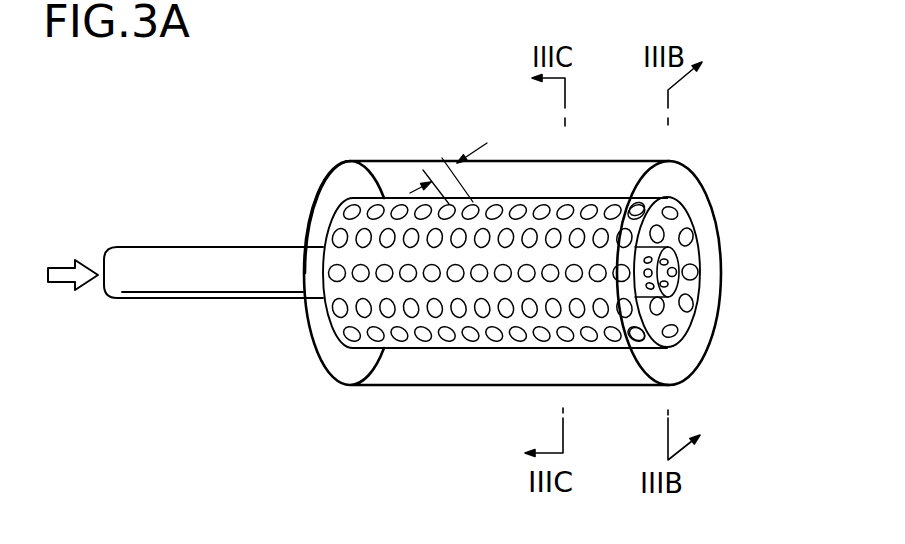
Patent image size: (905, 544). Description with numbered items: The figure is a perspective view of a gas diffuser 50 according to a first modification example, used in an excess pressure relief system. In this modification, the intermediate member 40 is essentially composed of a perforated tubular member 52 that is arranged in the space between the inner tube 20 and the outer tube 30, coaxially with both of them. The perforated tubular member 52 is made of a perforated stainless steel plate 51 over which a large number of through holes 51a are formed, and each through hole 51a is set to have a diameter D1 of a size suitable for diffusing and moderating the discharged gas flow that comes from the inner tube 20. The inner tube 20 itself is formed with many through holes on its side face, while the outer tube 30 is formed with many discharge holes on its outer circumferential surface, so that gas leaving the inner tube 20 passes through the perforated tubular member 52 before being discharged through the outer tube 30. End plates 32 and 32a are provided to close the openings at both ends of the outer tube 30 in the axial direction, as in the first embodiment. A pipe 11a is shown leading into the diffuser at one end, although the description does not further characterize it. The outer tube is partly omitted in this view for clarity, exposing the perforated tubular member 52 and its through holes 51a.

The inlet pipe 11a is at (163, 258).
The inner tube 20 is at (675, 235).
The outer tube 30 is at (394, 168).
The end plate 32 is at (670, 363).
The end plate 32a is at (341, 187).
The intermediate member 40 is at (550, 218).
The gas diffuser 50 is at (610, 116).
The perforated stainless steel plate 51 is at (490, 210).
The through holes 51a is at (522, 310).
The perforated tubular member 52 is at (607, 193).
The diameter D1 is at (442, 158).